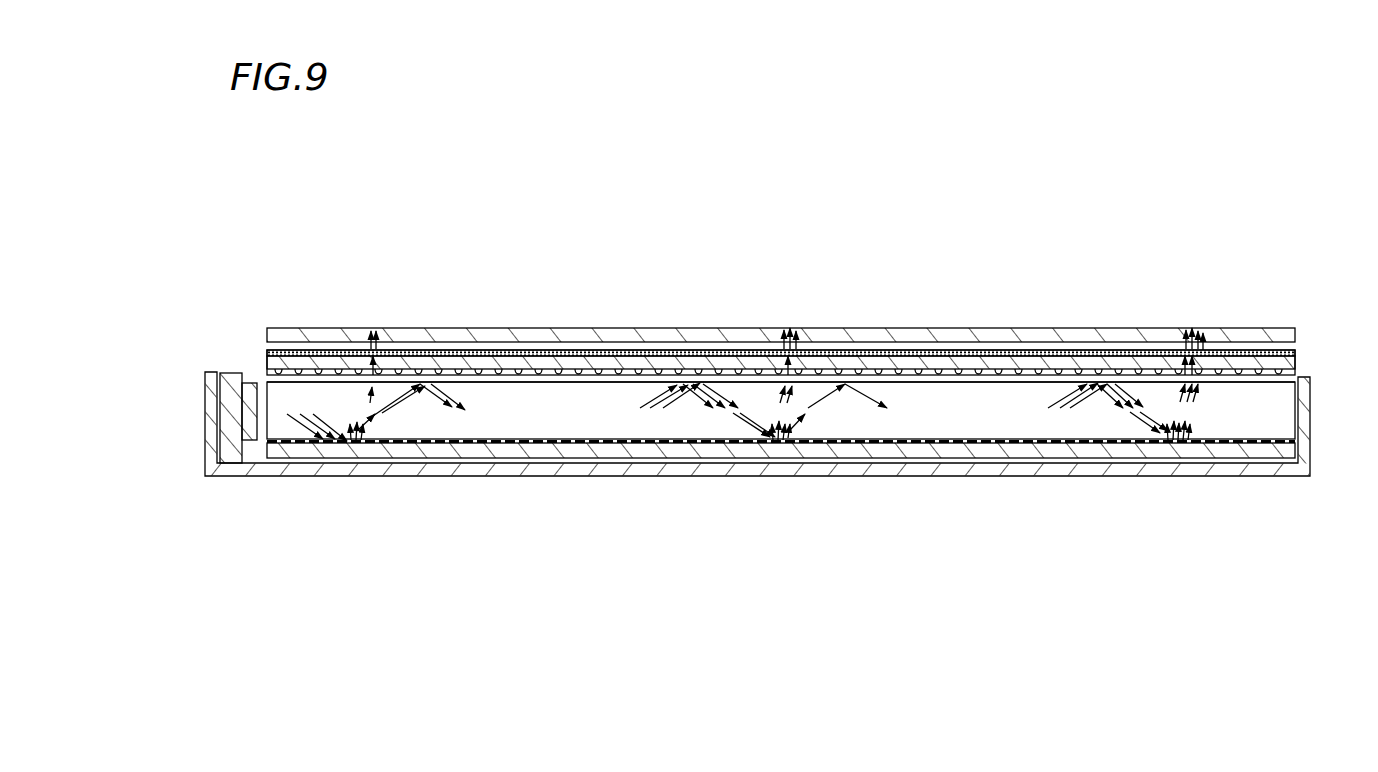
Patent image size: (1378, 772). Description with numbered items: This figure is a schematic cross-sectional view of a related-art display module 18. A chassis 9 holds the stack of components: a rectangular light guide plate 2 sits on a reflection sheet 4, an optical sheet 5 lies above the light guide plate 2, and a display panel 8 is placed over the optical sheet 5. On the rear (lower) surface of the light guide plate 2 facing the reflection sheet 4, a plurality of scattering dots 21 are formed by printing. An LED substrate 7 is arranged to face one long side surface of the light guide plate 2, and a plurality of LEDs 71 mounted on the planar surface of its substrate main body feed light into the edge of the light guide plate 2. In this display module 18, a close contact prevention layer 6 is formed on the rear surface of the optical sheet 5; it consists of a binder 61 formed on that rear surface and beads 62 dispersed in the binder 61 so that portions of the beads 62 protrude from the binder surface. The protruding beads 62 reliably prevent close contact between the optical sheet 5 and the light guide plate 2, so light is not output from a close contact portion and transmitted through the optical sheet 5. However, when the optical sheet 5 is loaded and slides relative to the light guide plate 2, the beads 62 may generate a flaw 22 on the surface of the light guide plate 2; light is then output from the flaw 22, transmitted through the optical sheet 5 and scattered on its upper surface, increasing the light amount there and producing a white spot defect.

The display module 18 is at (1225, 117).
The light guide plate 2 is at (1283, 418).
The scattering dots 21 is at (1055, 443).
The flaw 22 is at (581, 385).
The reflection sheet 4 is at (1242, 450).
The optical sheet 5 is at (1093, 367).
The close contact prevention layer 6 is at (811, 302).
The binder 61 is at (937, 356).
The beads 62 is at (953, 372).
The LED substrate 7 is at (229, 368).
The LEDs 71 is at (249, 384).
The display panel 8 is at (1008, 338).
The chassis 9 is at (1171, 470).